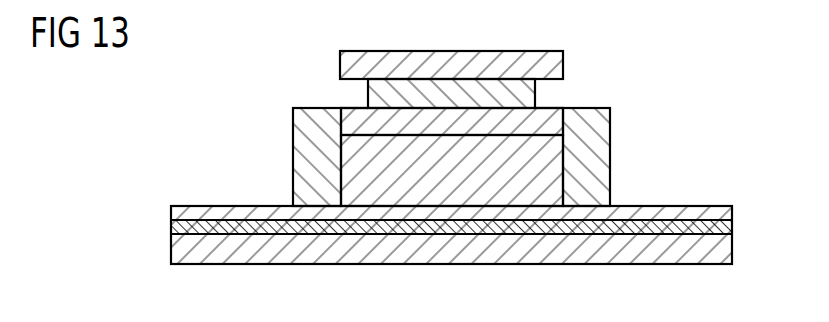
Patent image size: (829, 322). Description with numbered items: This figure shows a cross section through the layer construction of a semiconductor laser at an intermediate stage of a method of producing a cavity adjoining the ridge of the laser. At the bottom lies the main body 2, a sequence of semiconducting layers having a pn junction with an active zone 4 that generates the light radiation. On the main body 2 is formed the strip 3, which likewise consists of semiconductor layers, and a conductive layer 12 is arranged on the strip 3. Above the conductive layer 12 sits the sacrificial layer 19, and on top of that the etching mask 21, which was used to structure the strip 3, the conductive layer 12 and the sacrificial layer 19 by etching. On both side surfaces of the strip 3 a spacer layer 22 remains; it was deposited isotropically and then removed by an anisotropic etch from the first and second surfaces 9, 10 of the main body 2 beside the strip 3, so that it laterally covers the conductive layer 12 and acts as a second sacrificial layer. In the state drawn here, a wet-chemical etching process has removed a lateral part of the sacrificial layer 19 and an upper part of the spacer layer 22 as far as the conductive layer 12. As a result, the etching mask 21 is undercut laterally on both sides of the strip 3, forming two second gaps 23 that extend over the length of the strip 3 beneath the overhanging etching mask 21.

The main body 2 is at (165, 207).
The strip 3 is at (353, 156).
The active zone 4 is at (722, 228).
The first surface 9 is at (672, 205).
The second surface 10 is at (228, 205).
The conductive layer 12 is at (543, 123).
The sacrificial layer 19 is at (452, 95).
The etching mask 21 is at (500, 66).
The spacer layer 22 is at (305, 163).
The second gaps 23 is at (337, 94).